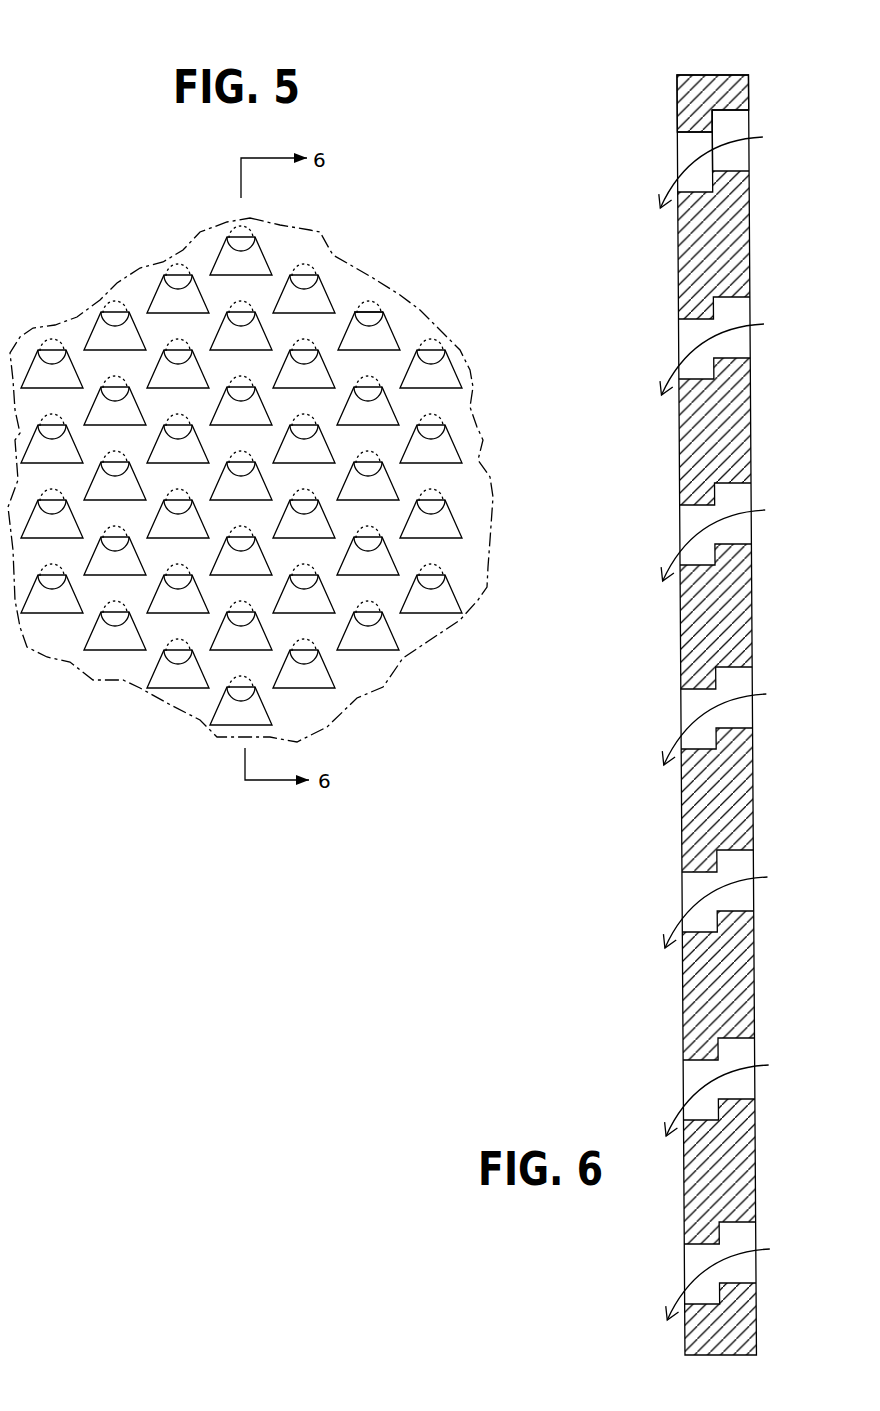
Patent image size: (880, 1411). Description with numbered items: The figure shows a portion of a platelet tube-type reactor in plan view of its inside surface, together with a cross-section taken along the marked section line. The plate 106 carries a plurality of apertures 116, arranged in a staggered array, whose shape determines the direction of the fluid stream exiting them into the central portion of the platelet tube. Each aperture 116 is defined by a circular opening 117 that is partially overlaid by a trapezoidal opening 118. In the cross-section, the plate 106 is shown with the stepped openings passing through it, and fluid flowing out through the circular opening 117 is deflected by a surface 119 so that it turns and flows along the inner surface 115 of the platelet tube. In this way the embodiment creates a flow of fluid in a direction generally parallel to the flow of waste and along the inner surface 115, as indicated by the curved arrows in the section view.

In FIG. 6, the plate 106 is at (712, 60).
In FIG. 6, the inner surface 115 is at (685, 103).
In FIG. 5, the apertures 116 is at (157, 265).
In FIG. 5, the circular opening 117 is at (369, 313).
In FIG. 6, the circular opening 117 is at (740, 157).
In FIG. 5, the trapezoidal opening 118 is at (378, 340).
In FIG. 6, the trapezoidal opening 118 is at (687, 143).
In FIG. 6, the surface 119 is at (710, 123).